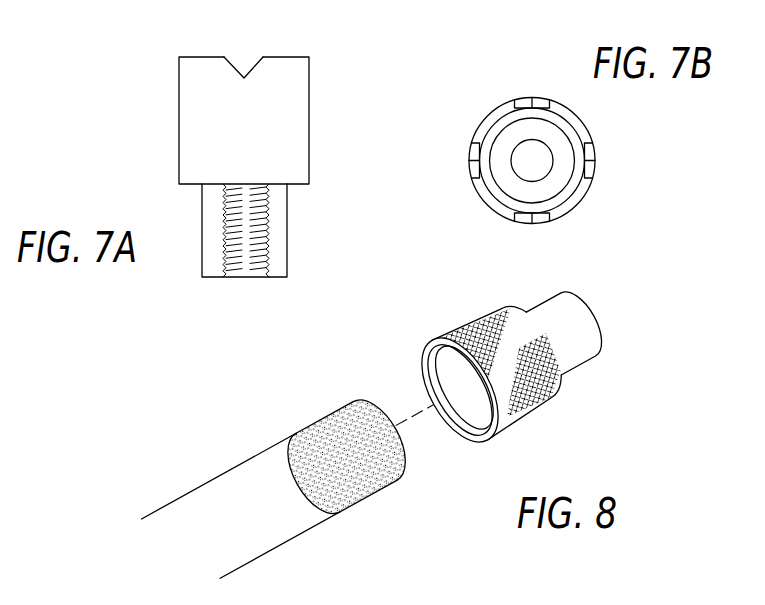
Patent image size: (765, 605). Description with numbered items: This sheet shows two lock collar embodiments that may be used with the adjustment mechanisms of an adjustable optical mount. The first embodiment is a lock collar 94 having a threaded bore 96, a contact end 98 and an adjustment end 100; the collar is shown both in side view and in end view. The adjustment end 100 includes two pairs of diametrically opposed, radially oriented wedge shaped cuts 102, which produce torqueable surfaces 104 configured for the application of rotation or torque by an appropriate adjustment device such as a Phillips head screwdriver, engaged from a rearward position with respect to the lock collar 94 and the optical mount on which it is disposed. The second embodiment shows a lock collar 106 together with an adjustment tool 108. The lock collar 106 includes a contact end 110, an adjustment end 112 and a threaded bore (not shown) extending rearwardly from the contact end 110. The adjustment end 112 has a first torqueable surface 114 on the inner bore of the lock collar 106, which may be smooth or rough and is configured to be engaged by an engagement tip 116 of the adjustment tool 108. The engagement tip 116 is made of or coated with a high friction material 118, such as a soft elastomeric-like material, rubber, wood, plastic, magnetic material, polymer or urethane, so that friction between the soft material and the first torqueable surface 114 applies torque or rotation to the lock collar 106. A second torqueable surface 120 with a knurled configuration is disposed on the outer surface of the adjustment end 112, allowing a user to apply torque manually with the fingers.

In FIG. 7A, the lock collar 94 is at (208, 170).
In FIG. 7B, the lock collar 94 is at (539, 149).
In FIG. 7A, the threaded bore 96 is at (238, 252).
In FIG. 7B, the threaded bore 96 is at (545, 176).
In FIG. 7A, the contact end 98 is at (287, 277).
In FIG. 7A, the adjustment end 100 is at (281, 92).
In FIG. 7A, the wedge shaped cuts 102 is at (237, 63).
In FIG. 7B, the wedge shaped cuts 102 is at (540, 98).
In FIG. 7B, the torqueable surfaces 104 is at (520, 98).
In FIG. 8, the lock collar 106 is at (505, 382).
In FIG. 8, the adjustment tool 108 is at (294, 494).
In FIG. 8, the contact end 110 is at (597, 319).
In FIG. 8, the adjustment end 112 is at (487, 438).
In FIG. 8, the first torqueable surface 114 is at (453, 367).
In FIG. 8, the engagement tip 116 is at (380, 485).
In FIG. 8, the high friction material 118 is at (332, 430).
In FIG. 8, the second torqueable surface 120 is at (487, 328).